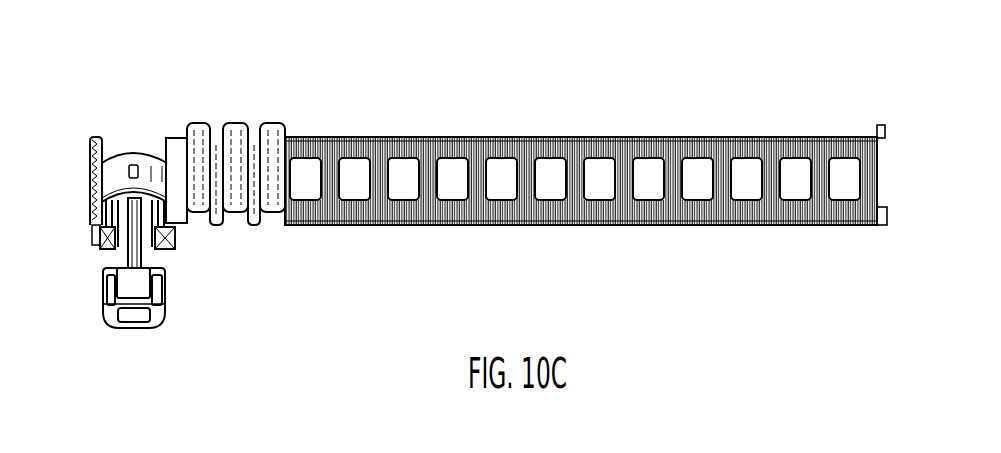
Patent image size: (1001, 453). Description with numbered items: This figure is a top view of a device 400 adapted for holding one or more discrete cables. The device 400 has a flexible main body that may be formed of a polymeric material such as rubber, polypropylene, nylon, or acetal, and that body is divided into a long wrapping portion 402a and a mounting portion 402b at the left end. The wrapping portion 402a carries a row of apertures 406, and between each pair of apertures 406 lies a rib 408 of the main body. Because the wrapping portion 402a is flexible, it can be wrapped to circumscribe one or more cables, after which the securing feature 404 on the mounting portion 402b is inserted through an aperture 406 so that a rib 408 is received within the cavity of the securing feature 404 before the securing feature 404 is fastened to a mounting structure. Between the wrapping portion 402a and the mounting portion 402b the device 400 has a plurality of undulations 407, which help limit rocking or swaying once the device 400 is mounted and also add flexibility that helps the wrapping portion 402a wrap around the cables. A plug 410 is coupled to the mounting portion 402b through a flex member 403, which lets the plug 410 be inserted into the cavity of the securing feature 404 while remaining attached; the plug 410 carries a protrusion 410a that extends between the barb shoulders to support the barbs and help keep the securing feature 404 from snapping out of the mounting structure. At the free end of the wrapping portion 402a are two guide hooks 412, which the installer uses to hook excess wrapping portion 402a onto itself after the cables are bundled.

The device 400 is at (790, 44).
The wrapping portion 402a is at (688, 212).
The mounting portion 402b is at (133, 108).
The flex member 403 is at (122, 257).
The securing feature 404 is at (75, 137).
The apertures 406 is at (352, 152).
The undulations 407 is at (235, 128).
The rib 408 is at (478, 212).
The plug 410 is at (166, 291).
The protrusion 410a is at (137, 287).
The guide hooks 412 is at (884, 128).